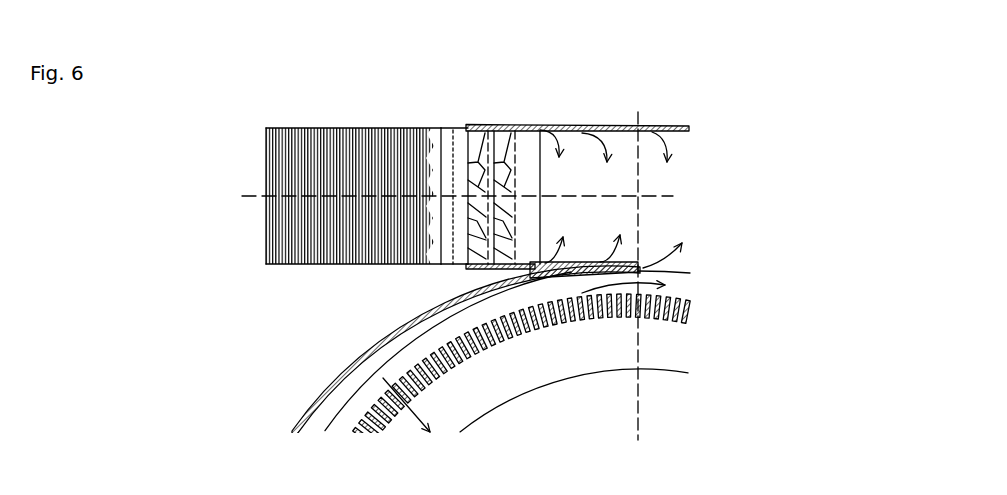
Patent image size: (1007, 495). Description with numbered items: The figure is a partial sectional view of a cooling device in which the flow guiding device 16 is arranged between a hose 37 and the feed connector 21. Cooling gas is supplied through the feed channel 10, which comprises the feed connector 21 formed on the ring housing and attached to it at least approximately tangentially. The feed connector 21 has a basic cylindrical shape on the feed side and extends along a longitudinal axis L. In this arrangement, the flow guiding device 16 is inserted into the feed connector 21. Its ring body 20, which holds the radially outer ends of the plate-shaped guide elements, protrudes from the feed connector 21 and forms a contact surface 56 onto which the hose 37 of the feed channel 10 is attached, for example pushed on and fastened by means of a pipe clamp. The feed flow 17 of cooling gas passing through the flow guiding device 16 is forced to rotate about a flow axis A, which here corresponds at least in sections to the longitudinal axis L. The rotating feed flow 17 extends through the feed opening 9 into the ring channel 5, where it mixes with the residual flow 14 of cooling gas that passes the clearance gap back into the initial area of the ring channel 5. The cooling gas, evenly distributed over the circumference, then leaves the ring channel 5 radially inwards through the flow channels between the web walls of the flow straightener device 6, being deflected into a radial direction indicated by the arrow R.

The feed channel 10 is at (342, 119).
The hose 37 is at (378, 127).
The contact surface 56 is at (458, 127).
The ring body 20 is at (482, 127).
The feed connector 21 is at (572, 125).
The flow axis A is at (602, 193).
The feed flow 17 is at (674, 145).
The feed opening 9 is at (640, 213).
The flow straightener device 6 is at (692, 307).
The residual flow 14 is at (612, 290).
The radial flow arrow R is at (418, 420).
The ring channel 5 is at (475, 325).
The flow guiding device 16 is at (446, 264).
The longitudinal axis L is at (301, 197).